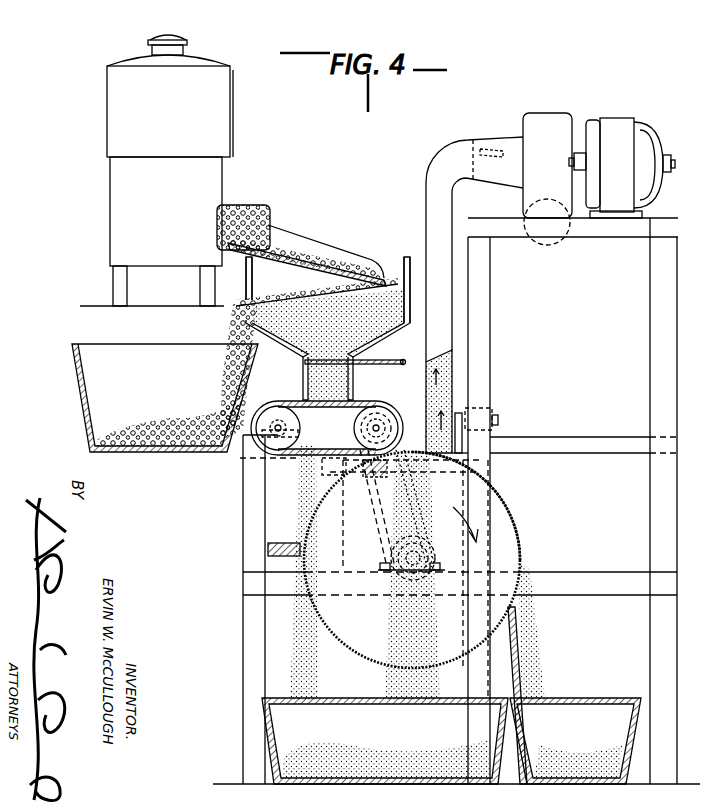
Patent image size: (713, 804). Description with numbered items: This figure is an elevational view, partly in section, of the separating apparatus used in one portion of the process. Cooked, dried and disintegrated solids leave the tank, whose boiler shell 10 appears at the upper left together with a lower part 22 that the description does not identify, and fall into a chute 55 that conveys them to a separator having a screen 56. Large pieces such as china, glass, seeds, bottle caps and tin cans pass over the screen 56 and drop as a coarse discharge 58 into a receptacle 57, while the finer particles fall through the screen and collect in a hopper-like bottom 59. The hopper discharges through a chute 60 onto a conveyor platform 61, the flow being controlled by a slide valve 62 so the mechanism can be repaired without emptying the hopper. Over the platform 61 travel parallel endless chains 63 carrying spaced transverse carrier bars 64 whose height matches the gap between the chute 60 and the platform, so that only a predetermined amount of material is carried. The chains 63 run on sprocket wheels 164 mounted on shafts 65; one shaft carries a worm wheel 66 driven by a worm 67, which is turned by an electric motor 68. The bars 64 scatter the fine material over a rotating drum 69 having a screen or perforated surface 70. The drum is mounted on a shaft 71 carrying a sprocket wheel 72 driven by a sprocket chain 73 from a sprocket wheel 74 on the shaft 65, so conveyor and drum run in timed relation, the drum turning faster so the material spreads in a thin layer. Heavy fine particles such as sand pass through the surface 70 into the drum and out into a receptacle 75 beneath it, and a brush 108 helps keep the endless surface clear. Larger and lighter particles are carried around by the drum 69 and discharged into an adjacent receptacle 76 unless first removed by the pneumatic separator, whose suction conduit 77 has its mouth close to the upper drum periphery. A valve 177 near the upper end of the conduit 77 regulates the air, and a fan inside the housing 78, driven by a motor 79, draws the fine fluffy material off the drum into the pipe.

The boiler shell 10 is at (117, 117).
The tank lower body 22 is at (120, 185).
The chute 55 is at (306, 252).
The screen 56 is at (367, 297).
The receptacle 57 is at (92, 377).
The discharge 58 is at (174, 452).
The hopper-like bottom 59 is at (295, 334).
The chute 60 is at (354, 390).
The conveyor platform 61 is at (325, 409).
The slide valve 62 is at (394, 360).
The chains 63 is at (297, 456).
The carrier bars 64 is at (378, 407).
The shafts 65 is at (277, 425).
The worm wheel 66 is at (385, 411).
The worm 67 is at (378, 466).
The electric motor 68 is at (498, 420).
The rotating drum 69 is at (503, 548).
The screen or perforated surface 70 is at (514, 521).
The shaft 71 is at (410, 562).
The sprocket wheel 72 is at (430, 540).
The sprocket chain 73 is at (384, 540).
The sprocket wheel 74 is at (392, 428).
The receptacle 75 is at (270, 748).
The receptacle 76 is at (635, 735).
The suction conduit 77 is at (447, 333).
The housing 78 is at (535, 135).
The motor 79 is at (618, 130).
The brush 108 is at (304, 507).
The sprocket wheels 164 is at (262, 440).
The valve 177 is at (472, 148).